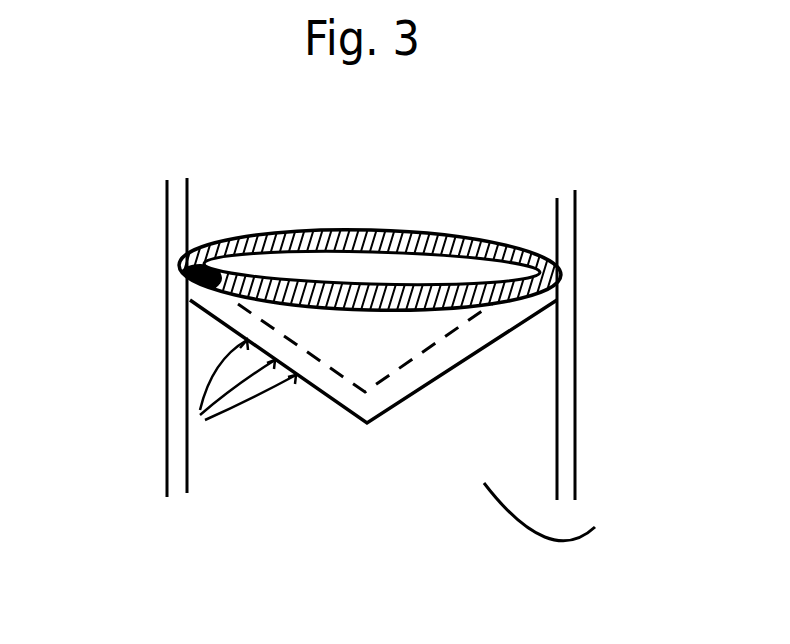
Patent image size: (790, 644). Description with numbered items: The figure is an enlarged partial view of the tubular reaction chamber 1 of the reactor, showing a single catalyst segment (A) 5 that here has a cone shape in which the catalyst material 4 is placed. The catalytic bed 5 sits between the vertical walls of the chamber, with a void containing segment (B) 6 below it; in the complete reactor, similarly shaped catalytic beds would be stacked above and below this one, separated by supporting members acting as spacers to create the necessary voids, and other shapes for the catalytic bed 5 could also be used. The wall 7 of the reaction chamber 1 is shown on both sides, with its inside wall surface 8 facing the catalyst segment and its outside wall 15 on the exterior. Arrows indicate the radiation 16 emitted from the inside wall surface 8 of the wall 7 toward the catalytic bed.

The reaction chamber 1 is at (618, 345).
The catalyst material 4 is at (335, 228).
The catalyst segment (A) 5 is at (572, 258).
The void containing segment (B) 6 is at (553, 516).
The wall 7 is at (565, 215).
The inside wall surface 8 is at (192, 348).
The outside wall 15 is at (578, 378).
The radiation 16 is at (196, 418).